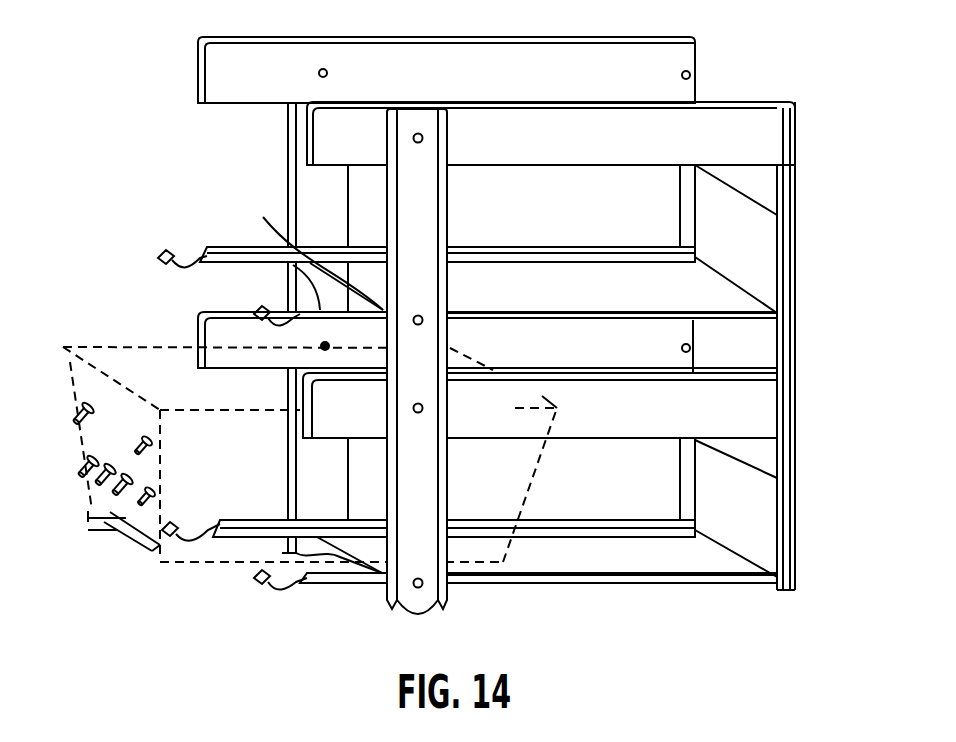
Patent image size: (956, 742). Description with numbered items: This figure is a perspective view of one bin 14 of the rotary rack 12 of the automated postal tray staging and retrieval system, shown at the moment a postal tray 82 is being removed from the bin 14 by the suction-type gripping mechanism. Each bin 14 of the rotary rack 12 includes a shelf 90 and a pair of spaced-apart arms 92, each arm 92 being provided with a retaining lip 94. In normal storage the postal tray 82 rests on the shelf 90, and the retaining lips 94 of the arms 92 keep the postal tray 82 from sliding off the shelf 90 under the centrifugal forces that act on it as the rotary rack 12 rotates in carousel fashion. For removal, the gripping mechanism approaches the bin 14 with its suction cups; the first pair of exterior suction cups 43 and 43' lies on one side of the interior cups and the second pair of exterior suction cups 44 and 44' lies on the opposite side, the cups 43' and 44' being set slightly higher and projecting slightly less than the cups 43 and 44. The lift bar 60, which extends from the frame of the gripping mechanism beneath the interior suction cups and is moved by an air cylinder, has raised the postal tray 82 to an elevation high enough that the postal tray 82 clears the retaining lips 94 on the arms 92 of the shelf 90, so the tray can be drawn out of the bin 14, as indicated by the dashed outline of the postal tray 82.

The rotary rack 12 is at (512, 313).
The bins 14 is at (790, 245).
The shelf 90 is at (531, 270).
The spaced-apart arms 92 is at (250, 243).
The retaining lip 94 is at (170, 250).
The postal tray 82 is at (530, 481).
The exterior suction cup 44 is at (81, 436).
The exterior suction cup 44' is at (60, 388).
The exterior suction cup 43 is at (169, 494).
The exterior suction cup 43' is at (172, 444).
The lift bar 60 is at (140, 550).